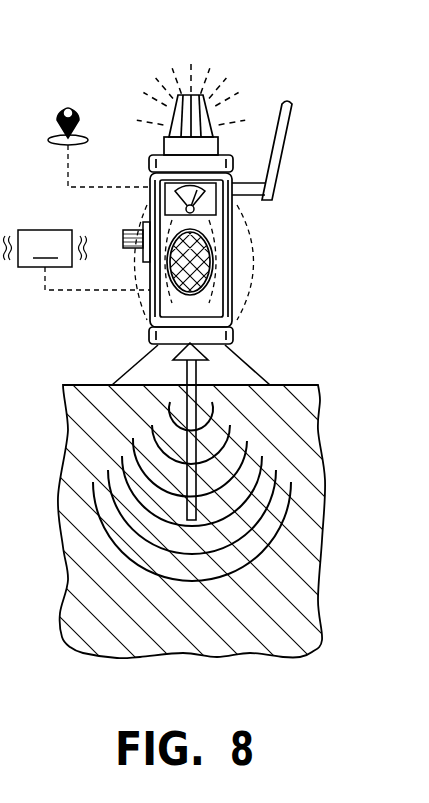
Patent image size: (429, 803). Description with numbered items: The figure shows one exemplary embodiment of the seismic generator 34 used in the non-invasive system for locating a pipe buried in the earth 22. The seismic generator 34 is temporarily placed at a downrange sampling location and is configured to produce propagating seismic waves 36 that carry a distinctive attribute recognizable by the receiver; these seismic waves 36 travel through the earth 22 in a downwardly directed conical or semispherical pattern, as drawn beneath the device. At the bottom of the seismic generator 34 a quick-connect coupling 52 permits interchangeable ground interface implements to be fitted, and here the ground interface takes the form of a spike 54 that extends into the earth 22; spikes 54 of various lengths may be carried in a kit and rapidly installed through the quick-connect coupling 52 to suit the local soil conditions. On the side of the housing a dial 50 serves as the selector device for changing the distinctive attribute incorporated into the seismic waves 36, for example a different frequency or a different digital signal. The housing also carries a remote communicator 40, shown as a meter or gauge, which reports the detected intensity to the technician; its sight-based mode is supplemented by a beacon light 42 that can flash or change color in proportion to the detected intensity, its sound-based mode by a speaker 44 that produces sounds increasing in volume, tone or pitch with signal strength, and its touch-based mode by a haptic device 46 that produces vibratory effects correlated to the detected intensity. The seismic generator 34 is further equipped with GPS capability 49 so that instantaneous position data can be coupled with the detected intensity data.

The earth 22 is at (302, 633).
The seismic generator 34 is at (235, 293).
The seismic waves 36 is at (265, 546).
The remote communicator 40 is at (210, 203).
The beacon light 42 is at (205, 103).
The speaker 44 is at (208, 262).
The haptic device 46 is at (77, 260).
The GPS capability 49 is at (82, 137).
The dial 50 is at (128, 232).
The quick-connect coupling 52 is at (200, 354).
The spike 54 is at (192, 395).